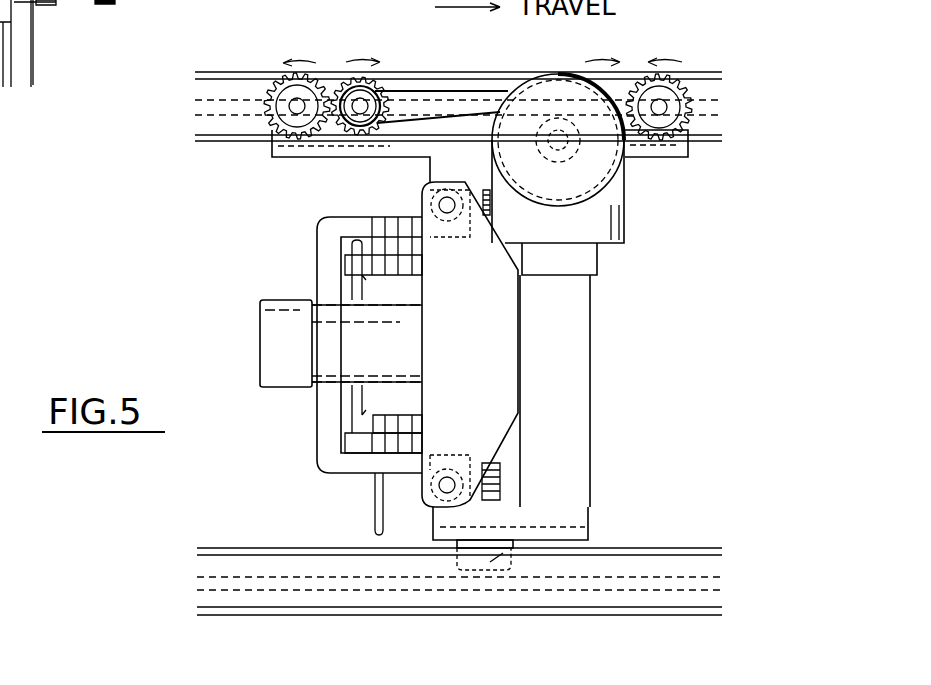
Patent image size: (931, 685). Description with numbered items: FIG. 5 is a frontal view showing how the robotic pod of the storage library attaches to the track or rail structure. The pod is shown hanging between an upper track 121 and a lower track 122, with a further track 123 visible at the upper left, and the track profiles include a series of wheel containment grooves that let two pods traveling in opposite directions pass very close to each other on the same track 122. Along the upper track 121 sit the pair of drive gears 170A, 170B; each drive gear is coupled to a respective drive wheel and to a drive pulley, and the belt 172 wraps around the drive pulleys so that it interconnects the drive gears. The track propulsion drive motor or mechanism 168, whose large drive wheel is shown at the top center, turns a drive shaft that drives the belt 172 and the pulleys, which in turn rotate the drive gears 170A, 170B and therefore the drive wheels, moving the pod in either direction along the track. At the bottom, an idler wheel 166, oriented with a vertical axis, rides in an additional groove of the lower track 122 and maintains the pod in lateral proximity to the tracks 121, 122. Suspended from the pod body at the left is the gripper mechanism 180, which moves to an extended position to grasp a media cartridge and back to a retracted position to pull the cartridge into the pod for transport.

The track 121 is at (710, 140).
The track 122 is at (628, 548).
The track 123 is at (42, 4).
The idler wheel 166 is at (517, 540).
The track propulsion drive motor 168 is at (626, 231).
The drive gear 170A is at (678, 85).
The drive gear 170B is at (330, 82).
The belt 172 is at (438, 90).
The gripper mechanism 180 is at (316, 240).